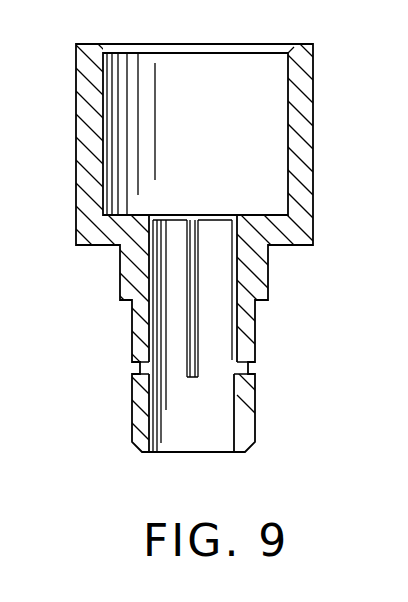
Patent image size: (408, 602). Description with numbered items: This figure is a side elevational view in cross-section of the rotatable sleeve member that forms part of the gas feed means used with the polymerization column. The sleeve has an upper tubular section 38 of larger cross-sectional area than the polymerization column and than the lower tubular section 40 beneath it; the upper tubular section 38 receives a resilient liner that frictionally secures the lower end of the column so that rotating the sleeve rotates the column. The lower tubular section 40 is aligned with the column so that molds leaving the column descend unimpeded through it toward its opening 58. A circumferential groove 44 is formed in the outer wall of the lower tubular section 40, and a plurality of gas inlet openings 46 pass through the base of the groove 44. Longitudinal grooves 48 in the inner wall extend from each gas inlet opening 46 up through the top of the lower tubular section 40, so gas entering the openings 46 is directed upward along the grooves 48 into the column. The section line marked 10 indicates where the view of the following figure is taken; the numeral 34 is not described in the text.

The housing body 34 is at (322, 140).
The upper tubular section 38 is at (308, 67).
The lower tubular section 40 is at (257, 406).
The circumferential groove 44 is at (133, 367).
The gas inlet openings 46 is at (251, 366).
The longitudinal grooves 48 is at (188, 235).
The opening 58 is at (209, 453).
The section line 10- 10 is at (50, 300).